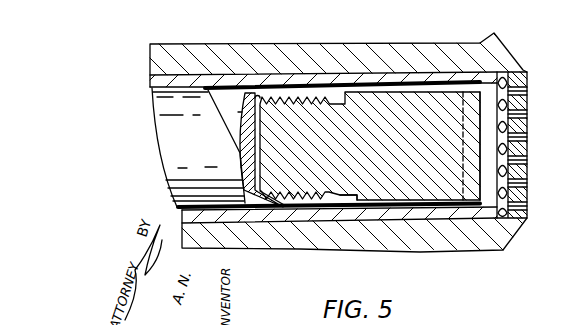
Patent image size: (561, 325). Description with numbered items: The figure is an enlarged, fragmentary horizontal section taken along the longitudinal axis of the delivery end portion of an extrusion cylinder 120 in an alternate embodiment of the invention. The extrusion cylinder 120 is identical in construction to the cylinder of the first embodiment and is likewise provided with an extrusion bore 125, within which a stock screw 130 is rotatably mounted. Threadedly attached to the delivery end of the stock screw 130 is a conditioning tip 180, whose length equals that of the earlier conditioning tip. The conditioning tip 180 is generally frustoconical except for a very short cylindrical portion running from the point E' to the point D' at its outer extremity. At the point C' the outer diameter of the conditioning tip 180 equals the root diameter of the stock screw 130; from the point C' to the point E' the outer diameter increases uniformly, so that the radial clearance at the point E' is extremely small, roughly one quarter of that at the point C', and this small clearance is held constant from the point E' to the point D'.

The extrusion cylinder 120 is at (318, 47).
The extrusion bore 125 is at (486, 87).
The stock screw 130 is at (160, 147).
The conditioning tip 180 is at (430, 80).
The point C' is at (353, 243).
The point E' is at (466, 192).
The point D' is at (488, 191).